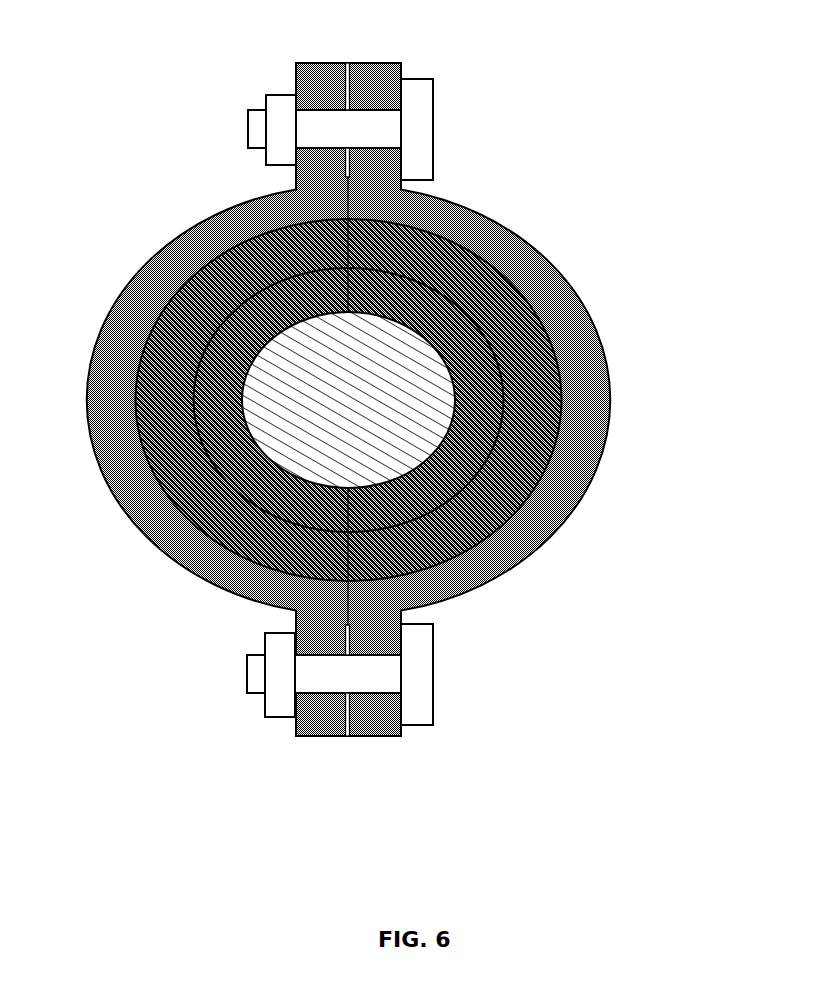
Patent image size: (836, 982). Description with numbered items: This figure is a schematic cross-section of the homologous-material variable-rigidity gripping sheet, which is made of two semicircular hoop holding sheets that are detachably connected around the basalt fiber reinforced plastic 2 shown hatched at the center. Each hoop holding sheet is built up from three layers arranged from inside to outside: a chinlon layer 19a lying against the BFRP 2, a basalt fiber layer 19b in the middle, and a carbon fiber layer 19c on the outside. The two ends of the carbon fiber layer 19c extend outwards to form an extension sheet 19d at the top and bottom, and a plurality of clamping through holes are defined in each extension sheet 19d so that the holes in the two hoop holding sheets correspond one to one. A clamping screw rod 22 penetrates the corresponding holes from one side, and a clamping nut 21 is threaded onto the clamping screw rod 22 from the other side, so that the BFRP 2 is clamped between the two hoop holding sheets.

The basalt fiber reinforced plastic 2 is at (287, 393).
The chinlon layer 19a is at (483, 390).
The basalt fiber layer 19b is at (533, 400).
The carbon fiber layer 19c is at (478, 563).
The extension sheet 19d is at (379, 167).
The clamping nut 21 is at (282, 130).
The clamping screw rod 22 is at (398, 128).